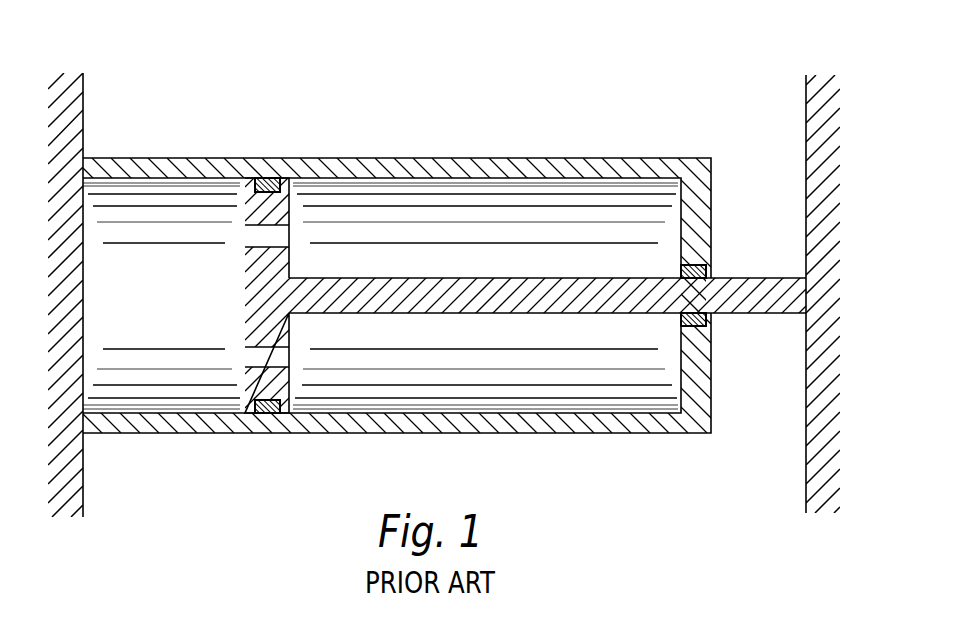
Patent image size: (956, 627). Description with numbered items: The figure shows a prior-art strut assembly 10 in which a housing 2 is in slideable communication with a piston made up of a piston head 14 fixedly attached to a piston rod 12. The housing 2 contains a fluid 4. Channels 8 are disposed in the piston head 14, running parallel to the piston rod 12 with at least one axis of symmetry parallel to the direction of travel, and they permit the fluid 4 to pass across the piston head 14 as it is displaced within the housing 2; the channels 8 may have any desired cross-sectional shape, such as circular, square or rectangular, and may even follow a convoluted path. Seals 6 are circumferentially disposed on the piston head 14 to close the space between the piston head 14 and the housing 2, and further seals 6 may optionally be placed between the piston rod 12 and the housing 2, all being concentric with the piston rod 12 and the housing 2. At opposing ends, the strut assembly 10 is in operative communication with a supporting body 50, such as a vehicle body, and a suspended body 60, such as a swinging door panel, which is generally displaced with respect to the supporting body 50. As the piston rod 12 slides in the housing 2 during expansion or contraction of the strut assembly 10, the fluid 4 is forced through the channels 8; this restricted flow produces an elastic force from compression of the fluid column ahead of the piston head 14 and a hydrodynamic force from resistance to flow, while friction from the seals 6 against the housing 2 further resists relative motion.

The housing 2 is at (390, 433).
The fluid 4 is at (155, 213).
The seals 6 is at (267, 187).
The channels 8 is at (278, 237).
The strut assembly 10 is at (512, 92).
The piston rod 12 is at (550, 300).
The piston head 14 is at (252, 309).
The supporting body 50 is at (806, 117).
The suspended body 60 is at (85, 108).